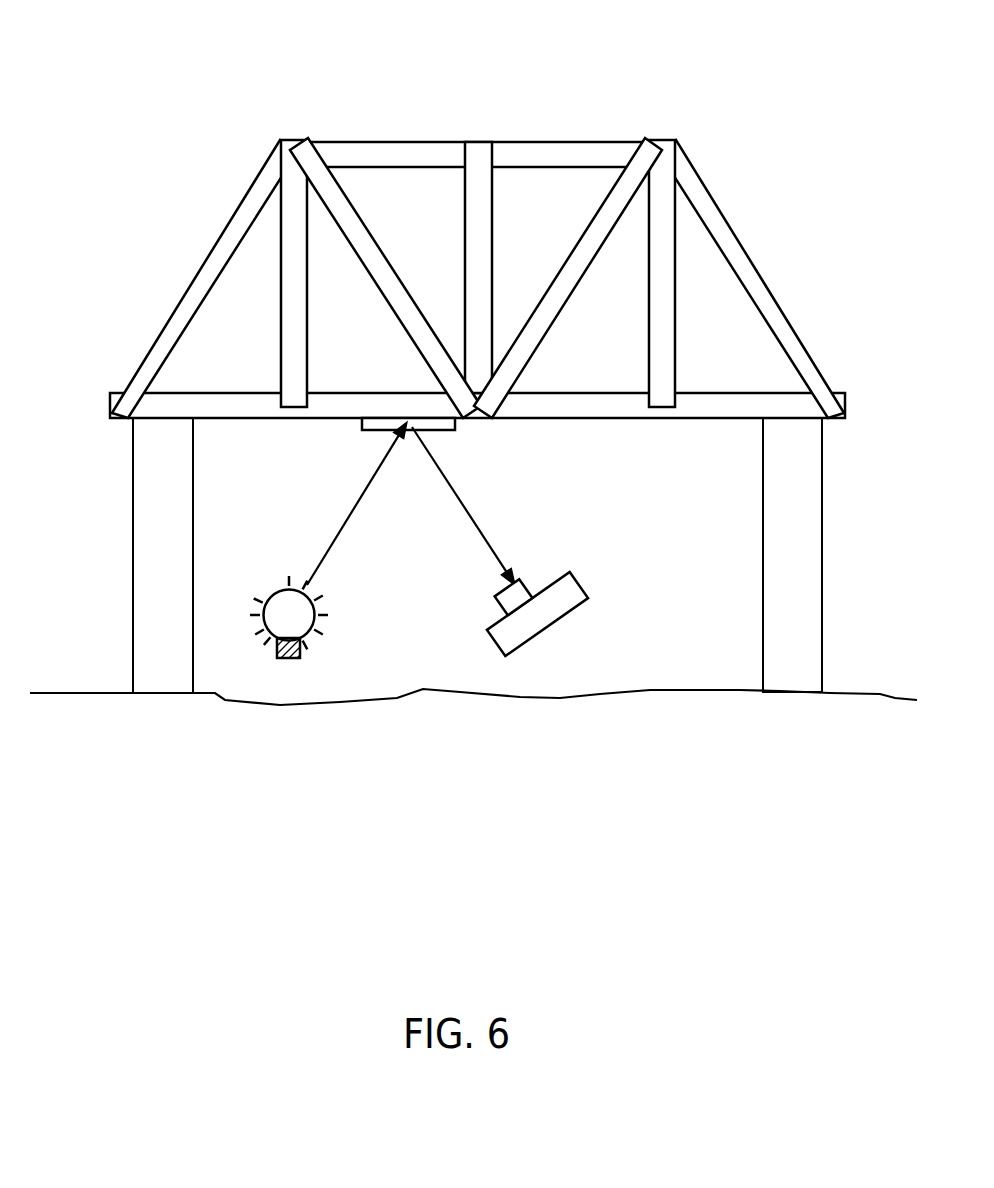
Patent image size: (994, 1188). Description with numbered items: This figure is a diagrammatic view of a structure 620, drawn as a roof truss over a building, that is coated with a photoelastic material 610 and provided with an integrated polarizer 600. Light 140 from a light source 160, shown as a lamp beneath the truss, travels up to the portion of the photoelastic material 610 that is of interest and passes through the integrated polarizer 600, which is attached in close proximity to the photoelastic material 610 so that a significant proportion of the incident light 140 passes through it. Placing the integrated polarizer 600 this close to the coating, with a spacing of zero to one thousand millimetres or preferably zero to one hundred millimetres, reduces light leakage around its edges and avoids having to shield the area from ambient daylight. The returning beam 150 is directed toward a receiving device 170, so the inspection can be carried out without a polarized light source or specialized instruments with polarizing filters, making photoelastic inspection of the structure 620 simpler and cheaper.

The structure 620 is at (362, 142).
The photoelastic material 610 is at (313, 422).
The integrated polarizer 600 is at (363, 432).
The light source 160 is at (272, 593).
The light 140 is at (350, 522).
The reflected light beam 150 is at (470, 508).
The light detector 170 is at (572, 617).